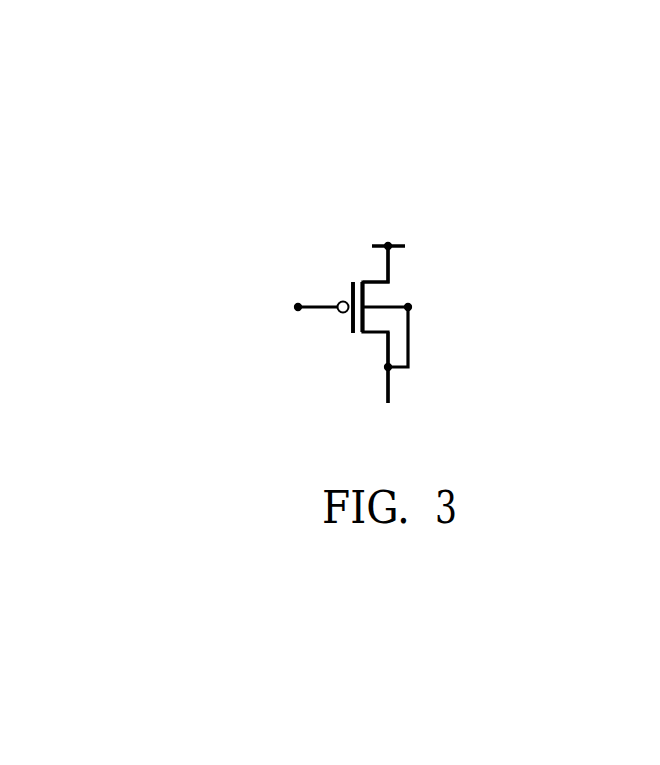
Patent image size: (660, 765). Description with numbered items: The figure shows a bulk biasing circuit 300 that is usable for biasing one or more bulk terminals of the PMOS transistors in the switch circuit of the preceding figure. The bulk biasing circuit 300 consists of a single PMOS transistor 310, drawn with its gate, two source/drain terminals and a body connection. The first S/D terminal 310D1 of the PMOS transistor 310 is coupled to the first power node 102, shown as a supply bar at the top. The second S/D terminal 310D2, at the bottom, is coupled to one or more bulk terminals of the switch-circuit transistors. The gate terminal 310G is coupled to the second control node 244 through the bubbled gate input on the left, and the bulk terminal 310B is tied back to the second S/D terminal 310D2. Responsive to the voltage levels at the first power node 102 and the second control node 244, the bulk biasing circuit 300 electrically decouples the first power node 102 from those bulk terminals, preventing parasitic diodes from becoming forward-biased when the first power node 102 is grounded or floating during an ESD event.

The bulk biasing circuit 300 is at (247, 180).
The PMOS transistor 310 is at (355, 353).
The gate terminal 310G is at (339, 302).
The second control node 244 is at (297, 306).
The first power node 102 is at (387, 244).
The first S/D terminal 310D1 is at (388, 265).
The bulk terminal 310B is at (410, 307).
The second S/D terminal 310D2 is at (389, 369).